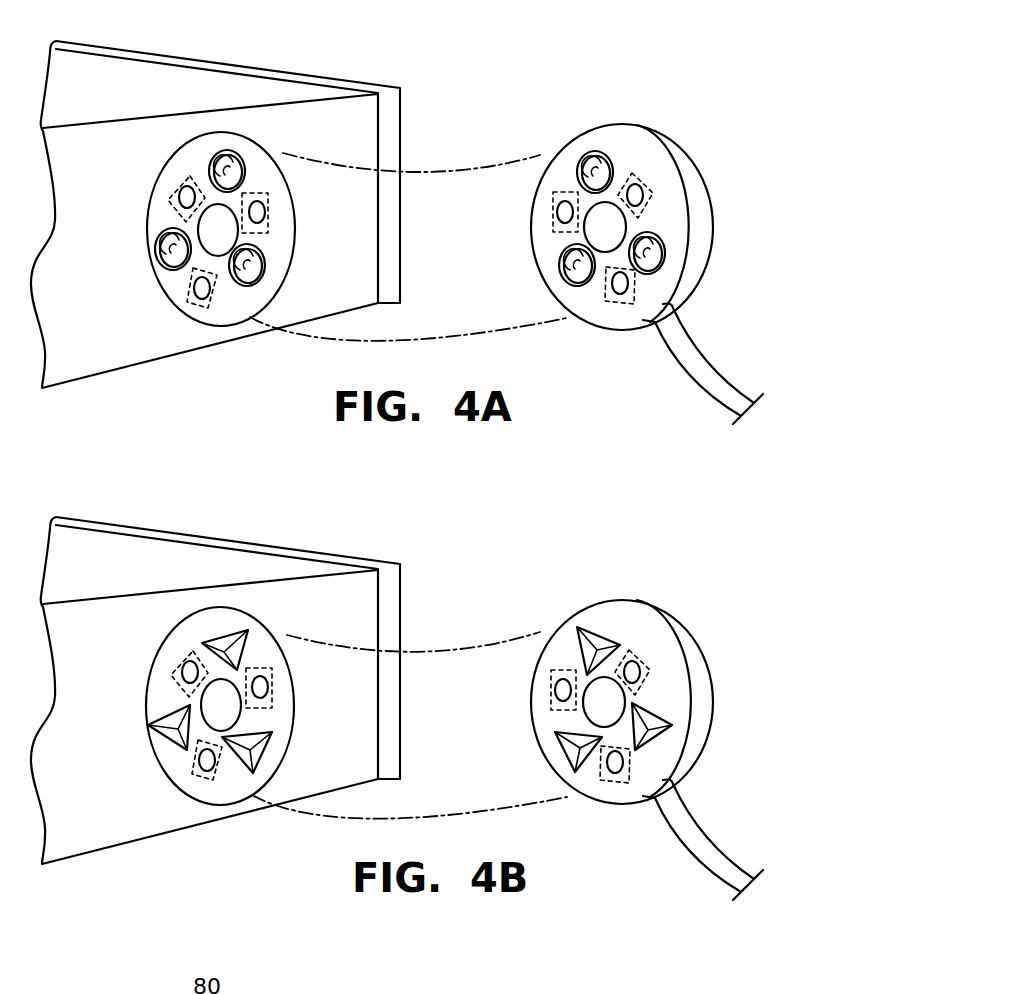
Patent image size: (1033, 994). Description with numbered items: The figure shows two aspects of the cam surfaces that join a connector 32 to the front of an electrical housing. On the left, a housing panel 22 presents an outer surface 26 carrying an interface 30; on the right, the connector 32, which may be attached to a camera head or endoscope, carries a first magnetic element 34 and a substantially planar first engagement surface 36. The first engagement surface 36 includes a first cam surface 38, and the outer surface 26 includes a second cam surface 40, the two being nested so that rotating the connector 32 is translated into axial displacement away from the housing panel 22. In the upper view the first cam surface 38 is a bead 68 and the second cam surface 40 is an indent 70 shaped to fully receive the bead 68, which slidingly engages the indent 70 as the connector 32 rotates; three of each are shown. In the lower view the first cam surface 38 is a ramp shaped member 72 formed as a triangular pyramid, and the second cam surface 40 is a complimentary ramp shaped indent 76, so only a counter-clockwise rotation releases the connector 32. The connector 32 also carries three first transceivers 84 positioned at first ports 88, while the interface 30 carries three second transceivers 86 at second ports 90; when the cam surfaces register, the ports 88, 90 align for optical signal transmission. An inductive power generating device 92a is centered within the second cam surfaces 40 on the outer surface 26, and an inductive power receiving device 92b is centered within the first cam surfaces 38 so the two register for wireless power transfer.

In FIG. 4A, the housing panel 22 is at (460, 110).
In FIG. 4B, the housing panel 22 is at (460, 600).
In FIG. 4A, the outer surface 26 is at (273, 242).
In FIG. 4B, the outer surface 26 is at (262, 720).
In FIG. 4A, the interface 30 is at (330, 141).
In FIG. 4B, the interface 30 is at (330, 631).
In FIG. 4A, the connector 32 is at (723, 187).
In FIG. 4B, the connector 32 is at (722, 667).
In FIG. 4A, the first magnetic element 34 is at (592, 298).
In FIG. 4B, the first magnetic element 34 is at (587, 780).
In FIG. 4A, the first engagement surface 36 is at (615, 317).
In FIG. 4B, the first engagement surface 36 is at (610, 797).
In FIG. 4A, the first cam surface 38 is at (626, 182).
In FIG. 4B, the first cam surface 38 is at (623, 669).
In FIG. 4A, the second cam surface 40 is at (274, 175).
In FIG. 4B, the second cam surface 40 is at (275, 665).
In FIG. 4A, the bead 68 is at (595, 162).
In FIG. 4A, the indent 70 is at (228, 170).
In FIG. 4B, the ramp shaped member 72 is at (588, 628).
In FIG. 4B, the indent 76 is at (232, 648).
In FIG. 4A, the first transceiver 84 is at (651, 184).
In FIG. 4B, the first transceiver 84 is at (648, 658).
In FIG. 4A, the second transceiver 86 is at (165, 187).
In FIG. 4B, the second transceiver 86 is at (168, 664).
In FIG. 4A, the first port 88 is at (633, 188).
In FIG. 4B, the first port 88 is at (631, 668).
In FIG. 4A, the second port 90 is at (188, 188).
In FIG. 4B, the second port 90 is at (190, 664).
In FIG. 4A, the inductive power generating device 92a is at (208, 228).
In FIG. 4B, the inductive power generating device 92a is at (213, 706).
In FIG. 4A, the inductive power receiving device 92b is at (615, 232).
In FIG. 4B, the inductive power receiving device 92b is at (615, 712).